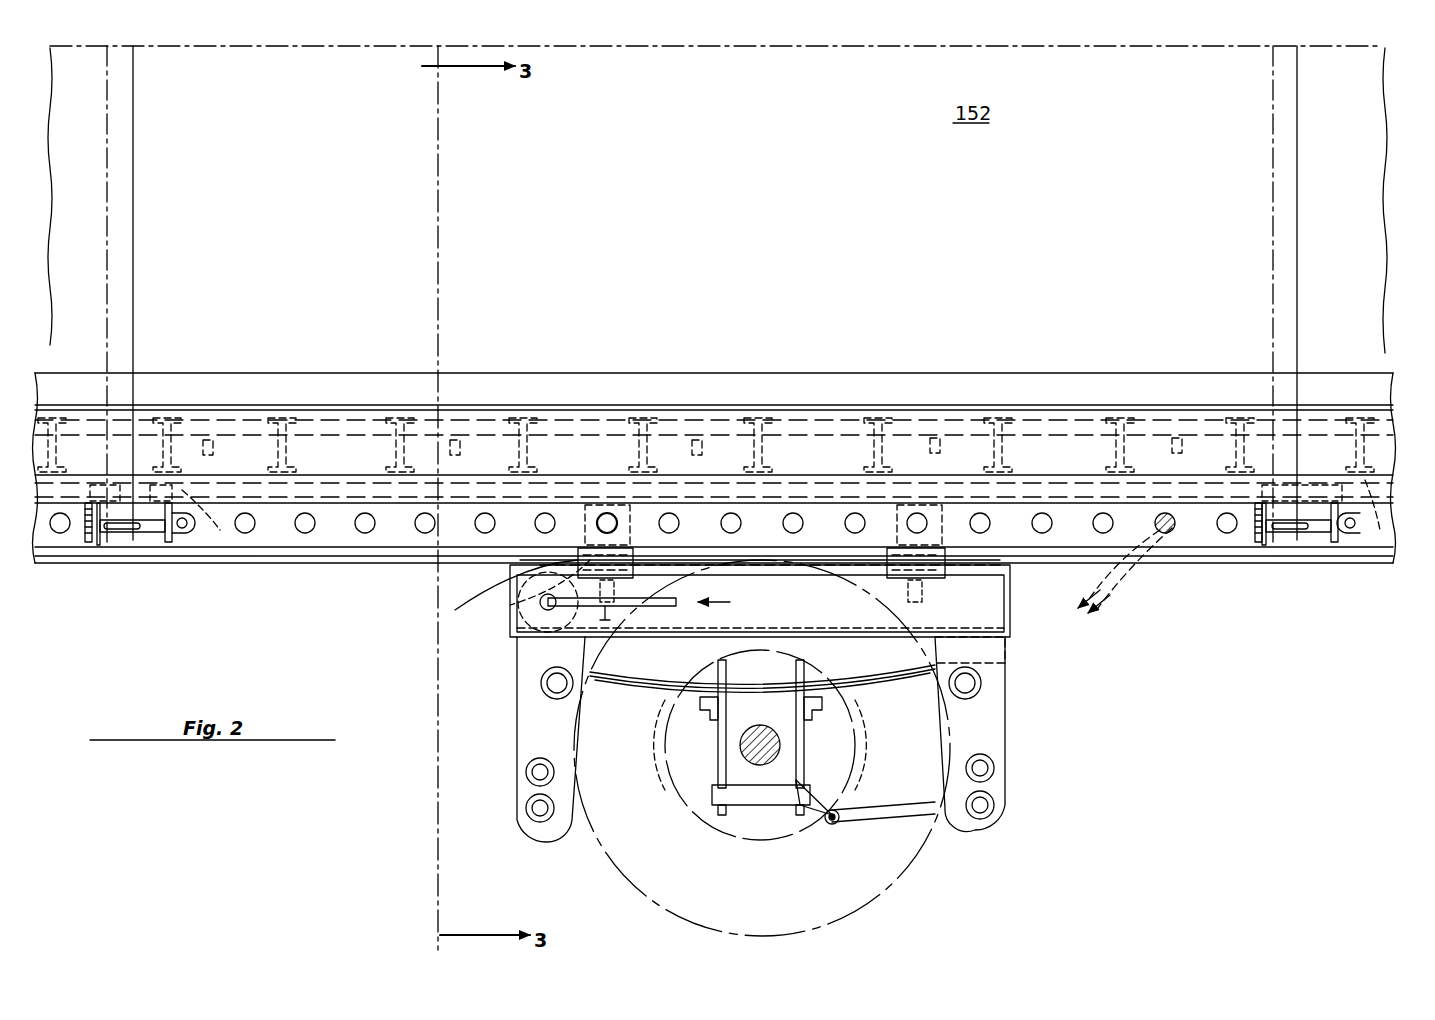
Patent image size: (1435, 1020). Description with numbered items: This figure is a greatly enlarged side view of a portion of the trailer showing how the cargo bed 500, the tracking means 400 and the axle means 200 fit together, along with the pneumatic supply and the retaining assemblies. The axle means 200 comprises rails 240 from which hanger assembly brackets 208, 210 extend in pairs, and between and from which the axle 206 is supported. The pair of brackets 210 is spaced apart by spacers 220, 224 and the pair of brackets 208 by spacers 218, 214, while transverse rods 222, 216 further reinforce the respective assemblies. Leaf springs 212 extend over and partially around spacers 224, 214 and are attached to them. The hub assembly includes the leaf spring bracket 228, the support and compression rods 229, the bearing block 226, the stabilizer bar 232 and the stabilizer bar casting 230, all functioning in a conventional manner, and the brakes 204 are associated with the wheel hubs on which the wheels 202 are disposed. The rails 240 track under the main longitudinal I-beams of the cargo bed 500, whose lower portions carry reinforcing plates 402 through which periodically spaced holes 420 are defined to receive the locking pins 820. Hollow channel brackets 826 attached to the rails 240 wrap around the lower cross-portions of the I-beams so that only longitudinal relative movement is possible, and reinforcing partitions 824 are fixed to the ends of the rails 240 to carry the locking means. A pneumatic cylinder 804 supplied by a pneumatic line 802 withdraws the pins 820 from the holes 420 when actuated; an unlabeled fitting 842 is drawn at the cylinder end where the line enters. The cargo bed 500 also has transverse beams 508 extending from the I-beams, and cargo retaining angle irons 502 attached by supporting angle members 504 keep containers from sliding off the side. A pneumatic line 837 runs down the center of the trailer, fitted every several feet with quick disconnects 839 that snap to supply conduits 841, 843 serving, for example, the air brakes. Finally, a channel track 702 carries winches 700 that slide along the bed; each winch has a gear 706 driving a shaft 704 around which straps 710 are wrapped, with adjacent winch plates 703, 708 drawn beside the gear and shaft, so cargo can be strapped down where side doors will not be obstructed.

The axle means 200 is at (789, 693).
The wheels 202 is at (865, 890).
The brakes 204 is at (745, 830).
The axle 206 is at (780, 740).
The hanger assembly bracket 208 is at (1010, 735).
The hanger assembly bracket 210 is at (525, 735).
The leaf springs 212 is at (660, 680).
The spacer 214 is at (965, 683).
The transverse rod 216 is at (980, 768).
The spacer 218 is at (980, 805).
The spacer 220 is at (540, 808).
The transverse rod 222 is at (540, 772).
The spacer 224 is at (545, 683).
The bearing block 226 is at (740, 773).
The leaf spring bracket 228 is at (770, 685).
The support and compression rods 229 is at (690, 752).
The stabilizer bar casting 230 is at (815, 825).
The stabilizer bar 232 is at (935, 815).
The rails 240 is at (985, 600).
The tracking means 400 is at (322, 568).
The reinforcing plates 402 is at (345, 530).
The holes 420 is at (355, 523).
The cargo bed 500 is at (714, 474).
The cargo retaining angle irons 502 is at (958, 380).
The supporting angle members 504 is at (820, 415).
The transverse beams 508 is at (410, 455).
The winches 700 is at (727, 571).
The channel track 702 is at (205, 545).
The anchor plate 703 is at (80, 490).
The shaft 704 is at (185, 530).
The gear 706 is at (88, 543).
The clamp plate 708 is at (168, 545).
The straps 710 is at (133, 187).
The pneumatic line 802 is at (650, 606).
The cylinder 804 is at (515, 628).
The locking pins 820 is at (560, 560).
The reinforcing partitions 824 is at (520, 578).
The hollow channel brackets 826 is at (655, 535).
The pneumatic line 837 is at (330, 440).
The quick disconnects 839 is at (222, 440).
The pneumatic supply conduit 841 is at (1145, 545).
The air fitting 842 is at (520, 595).
The pneumatic supply conduit 843 is at (1160, 540).